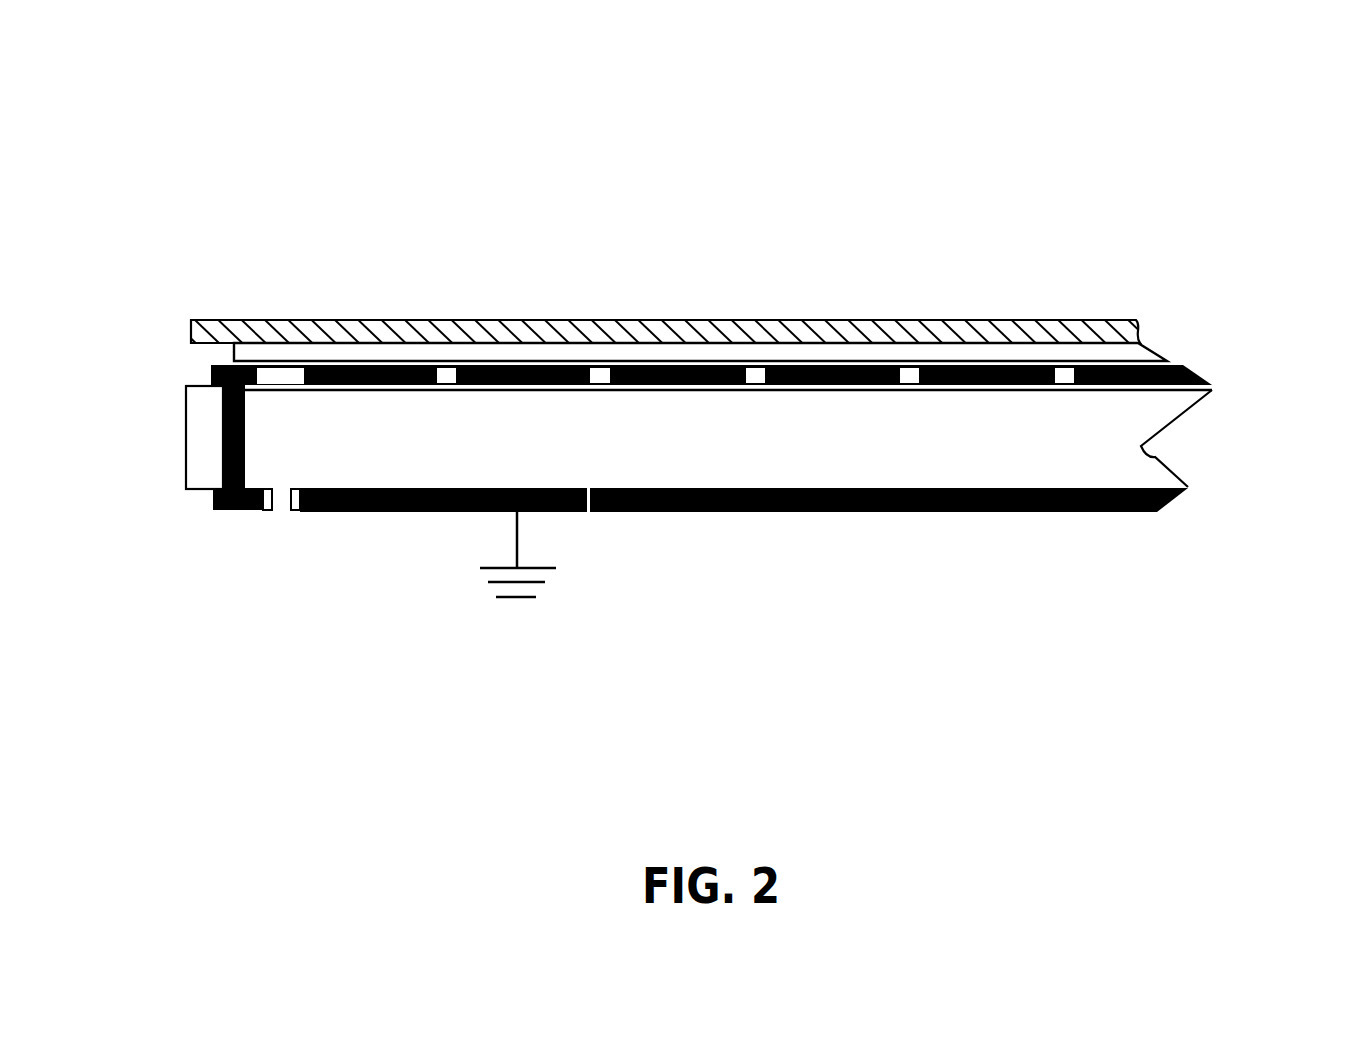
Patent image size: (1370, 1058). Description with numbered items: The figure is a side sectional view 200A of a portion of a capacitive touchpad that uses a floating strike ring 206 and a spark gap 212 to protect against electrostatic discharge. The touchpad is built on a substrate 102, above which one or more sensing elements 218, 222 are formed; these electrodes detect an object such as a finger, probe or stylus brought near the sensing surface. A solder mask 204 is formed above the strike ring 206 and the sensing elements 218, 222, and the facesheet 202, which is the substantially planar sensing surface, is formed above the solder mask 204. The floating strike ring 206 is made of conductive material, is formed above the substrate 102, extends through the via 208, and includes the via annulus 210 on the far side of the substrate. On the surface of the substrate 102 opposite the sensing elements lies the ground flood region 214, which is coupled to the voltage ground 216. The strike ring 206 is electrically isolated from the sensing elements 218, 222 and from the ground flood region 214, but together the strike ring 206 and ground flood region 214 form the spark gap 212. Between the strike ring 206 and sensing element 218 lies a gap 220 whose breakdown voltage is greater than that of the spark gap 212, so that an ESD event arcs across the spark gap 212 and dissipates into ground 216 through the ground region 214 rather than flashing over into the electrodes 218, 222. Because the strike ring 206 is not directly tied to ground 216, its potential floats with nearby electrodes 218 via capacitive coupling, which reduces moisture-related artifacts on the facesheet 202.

The side sectional view 200A is at (352, 136).
The substrate 102 is at (1158, 455).
The facesheet 202 is at (672, 253).
The solder mask 204 is at (1153, 355).
The floating strike ring 206 is at (212, 378).
The via 208 is at (223, 435).
The via annulus 210 is at (215, 507).
The spark gap 212 is at (291, 523).
The ground flood region 214 is at (1033, 512).
The voltage ground 216 is at (513, 597).
The sensing element 218 is at (345, 385).
The gap 220 is at (307, 308).
The sensing element 222 is at (520, 385).